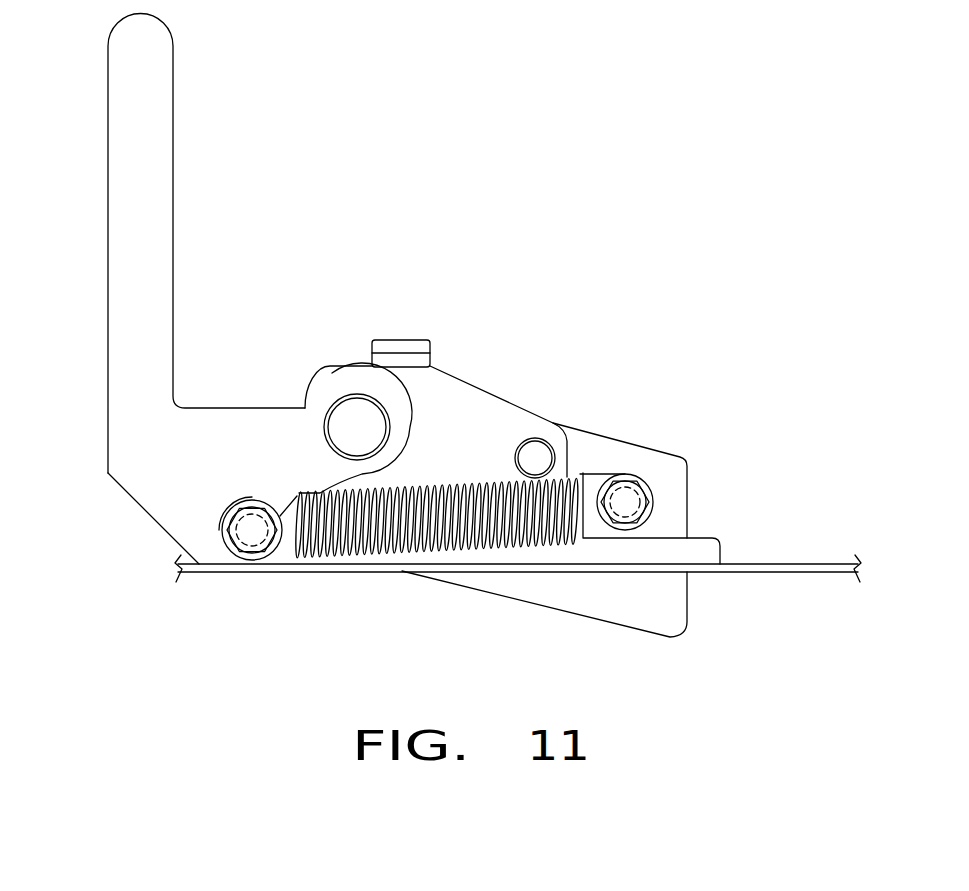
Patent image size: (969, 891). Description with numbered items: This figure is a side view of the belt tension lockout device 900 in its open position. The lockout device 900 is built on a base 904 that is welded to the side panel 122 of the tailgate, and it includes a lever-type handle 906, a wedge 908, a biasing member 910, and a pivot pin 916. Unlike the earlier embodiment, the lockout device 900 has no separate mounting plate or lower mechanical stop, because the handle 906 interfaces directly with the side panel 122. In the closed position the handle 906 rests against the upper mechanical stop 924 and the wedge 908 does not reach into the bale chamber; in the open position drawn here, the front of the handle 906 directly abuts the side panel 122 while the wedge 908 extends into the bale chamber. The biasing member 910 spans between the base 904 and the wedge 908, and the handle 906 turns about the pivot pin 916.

The lockout device 900 is at (620, 351).
The base 904 is at (480, 371).
The handle 906 is at (110, 362).
The wedge 908 is at (687, 612).
The biasing member 910 is at (434, 484).
The pivot pin 916 is at (357, 425).
The upper mechanical stop 924 is at (393, 339).
The side panel 122 is at (813, 563).